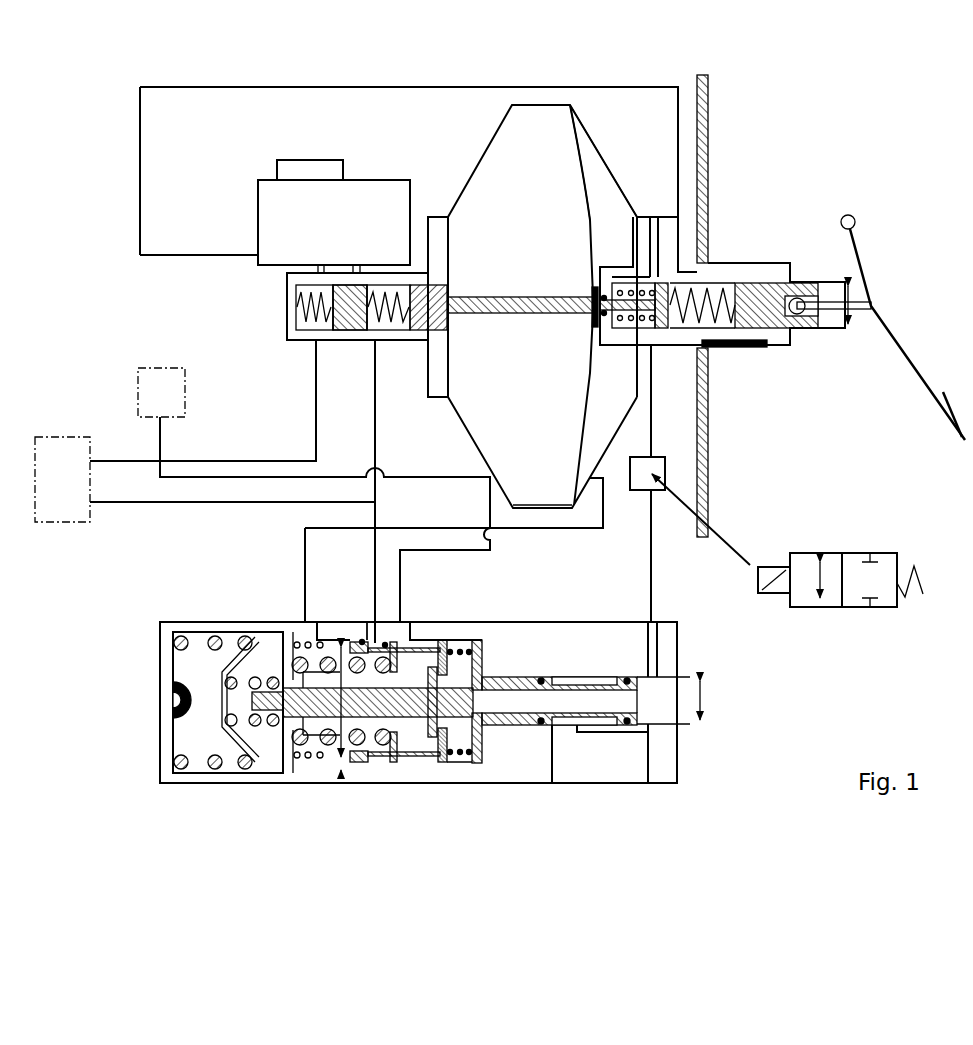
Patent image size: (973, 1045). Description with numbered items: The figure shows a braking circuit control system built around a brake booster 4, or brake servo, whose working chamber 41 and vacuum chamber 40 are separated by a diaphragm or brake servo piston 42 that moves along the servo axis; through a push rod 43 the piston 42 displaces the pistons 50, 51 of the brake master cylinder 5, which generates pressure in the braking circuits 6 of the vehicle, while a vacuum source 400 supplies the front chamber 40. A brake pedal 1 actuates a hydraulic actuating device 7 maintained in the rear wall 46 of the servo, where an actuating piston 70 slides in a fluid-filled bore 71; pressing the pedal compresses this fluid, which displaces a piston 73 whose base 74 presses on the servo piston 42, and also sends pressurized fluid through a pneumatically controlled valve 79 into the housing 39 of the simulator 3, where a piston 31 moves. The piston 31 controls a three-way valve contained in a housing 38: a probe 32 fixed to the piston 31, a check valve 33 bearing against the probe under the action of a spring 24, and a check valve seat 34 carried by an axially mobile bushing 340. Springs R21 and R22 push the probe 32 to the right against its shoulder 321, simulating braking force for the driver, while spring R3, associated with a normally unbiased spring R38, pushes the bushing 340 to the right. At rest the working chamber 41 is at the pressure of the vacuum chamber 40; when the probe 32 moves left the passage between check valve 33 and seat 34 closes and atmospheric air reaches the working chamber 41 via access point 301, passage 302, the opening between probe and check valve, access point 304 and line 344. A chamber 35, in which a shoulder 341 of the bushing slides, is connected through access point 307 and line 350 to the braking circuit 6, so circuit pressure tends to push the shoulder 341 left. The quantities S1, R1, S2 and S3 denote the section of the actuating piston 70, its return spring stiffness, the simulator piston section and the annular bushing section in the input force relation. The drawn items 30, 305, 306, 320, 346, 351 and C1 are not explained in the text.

The brake pedal 1 is at (893, 345).
The simulator 3 is at (708, 770).
The brake booster 4 is at (487, 150).
The brake master cylinder 5 is at (282, 318).
The braking circuits 6 is at (62, 437).
The hydraulic actuating device 7 is at (766, 266).
The spring 24 is at (470, 764).
The master cylinder housing 30 is at (490, 638).
The piston 31 is at (660, 690).
The probe 32 is at (372, 768).
The check valve 33 is at (477, 766).
The check valve seat 34 is at (442, 766).
The chamber 35 is at (390, 640).
The housing 38 is at (305, 777).
The housing 39 is at (655, 724).
The vacuum chamber 40 is at (528, 411).
The working chamber 41 is at (624, 404).
The brake servo piston 42 is at (577, 140).
The push rod 43 is at (516, 316).
The rear wall 46 is at (598, 152).
The piston 50 is at (428, 245).
The piston 51 is at (350, 333).
The actuating piston 70 is at (792, 280).
The bore 71 is at (722, 295).
The piston 73 is at (672, 222).
The base 74 is at (600, 297).
The valve 79 is at (665, 471).
The access point 301 is at (578, 770).
The passage 302 is at (538, 768).
The access point 304 is at (298, 637).
The passage 305 is at (436, 656).
The passage 306 is at (412, 640).
The access point 307 is at (366, 640).
The spring housing 320 is at (262, 776).
The shoulder 321 is at (258, 702).
The bushing 340 is at (368, 778).
The shoulder 341 is at (340, 648).
The line 344 is at (305, 550).
The conduit junction 346 is at (495, 542).
The line 350 is at (375, 526).
The control line 351 is at (225, 460).
The vacuum source 400 is at (160, 368).
The sensor C1 is at (740, 349).
The stiffness of the return spring of the actuating piston R1 is at (716, 292).
The spring R21 is at (232, 662).
The spring R22 is at (180, 643).
The spring R3 is at (292, 776).
The spring R38 is at (310, 648).
The hydraulic section of the actuating piston S1 is at (864, 318).
The section of the piston of the simulator S2 is at (716, 699).
The annular section of the bushing S3 is at (338, 735).